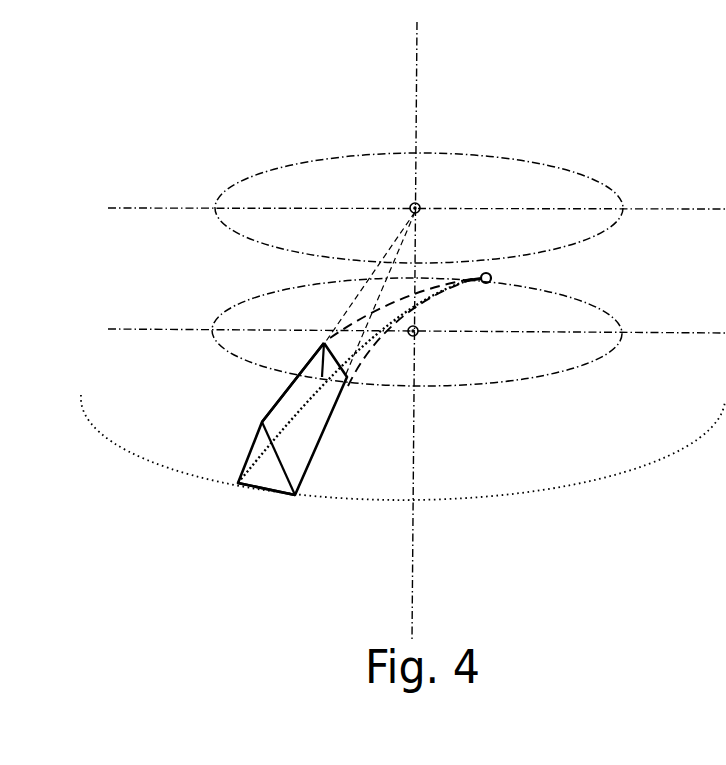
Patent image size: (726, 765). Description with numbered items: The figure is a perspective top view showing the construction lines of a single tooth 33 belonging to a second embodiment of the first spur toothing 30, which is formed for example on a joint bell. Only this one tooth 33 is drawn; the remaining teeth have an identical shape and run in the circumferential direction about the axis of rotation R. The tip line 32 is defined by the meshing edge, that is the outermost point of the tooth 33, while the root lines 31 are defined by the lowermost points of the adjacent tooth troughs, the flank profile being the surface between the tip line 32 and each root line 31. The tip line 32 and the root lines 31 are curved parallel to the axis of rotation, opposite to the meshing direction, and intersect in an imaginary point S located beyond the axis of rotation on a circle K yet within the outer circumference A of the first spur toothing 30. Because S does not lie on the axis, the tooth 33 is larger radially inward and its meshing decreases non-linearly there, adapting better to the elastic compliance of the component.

The first spur toothing 30 is at (464, 118).
The root line 31 is at (293, 417).
The tip line 32 is at (288, 386).
The tooth 33 is at (244, 493).